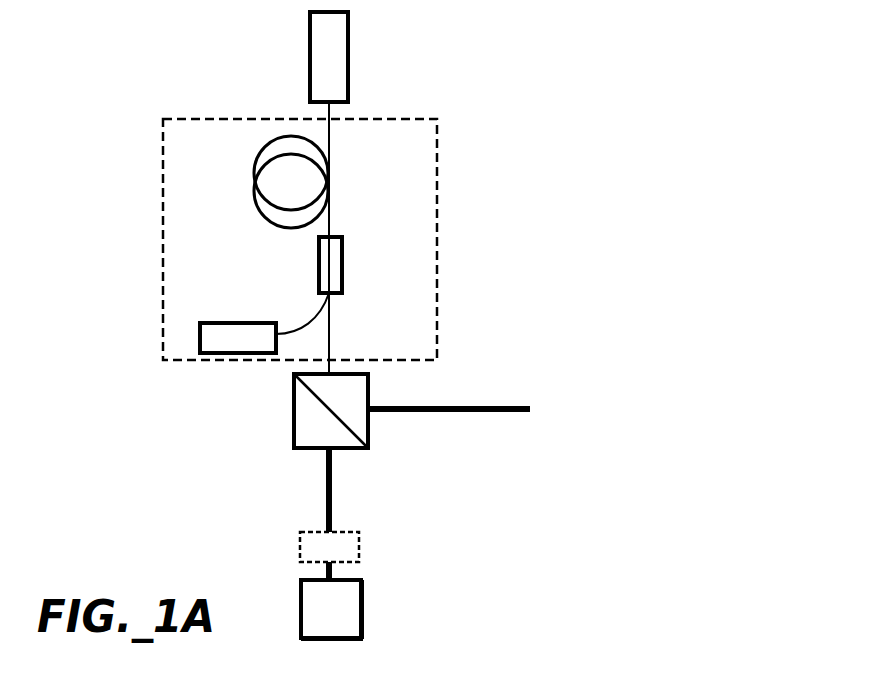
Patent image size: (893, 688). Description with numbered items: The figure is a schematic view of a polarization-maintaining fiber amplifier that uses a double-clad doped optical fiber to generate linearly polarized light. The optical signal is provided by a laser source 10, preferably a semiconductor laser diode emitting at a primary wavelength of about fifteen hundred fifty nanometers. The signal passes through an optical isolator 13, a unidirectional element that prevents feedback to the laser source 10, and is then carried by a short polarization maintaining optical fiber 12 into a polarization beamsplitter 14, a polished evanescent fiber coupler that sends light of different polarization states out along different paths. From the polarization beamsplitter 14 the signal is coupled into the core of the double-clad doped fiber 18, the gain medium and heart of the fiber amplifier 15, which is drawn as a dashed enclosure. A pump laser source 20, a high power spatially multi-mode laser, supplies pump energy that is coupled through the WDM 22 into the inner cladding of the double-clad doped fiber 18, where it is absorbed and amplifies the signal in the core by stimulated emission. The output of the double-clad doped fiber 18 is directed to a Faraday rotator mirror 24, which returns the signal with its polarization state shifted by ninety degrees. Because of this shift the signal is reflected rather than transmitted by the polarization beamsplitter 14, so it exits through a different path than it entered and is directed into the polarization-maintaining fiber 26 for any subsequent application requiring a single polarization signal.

The laser source 10 is at (362, 617).
The polarization maintaining optical fiber 12 is at (326, 485).
The optical isolator 13 is at (359, 550).
The polarization beamsplitter 14 is at (293, 419).
The fiber amplifier 15 is at (437, 206).
The double-clad doped fiber 18 is at (256, 173).
The pump laser source 20 is at (243, 320).
The WDM 22 is at (318, 270).
The Faraday rotator mirror 24 is at (348, 57).
The polarization-maintaining fiber 26 is at (480, 409).